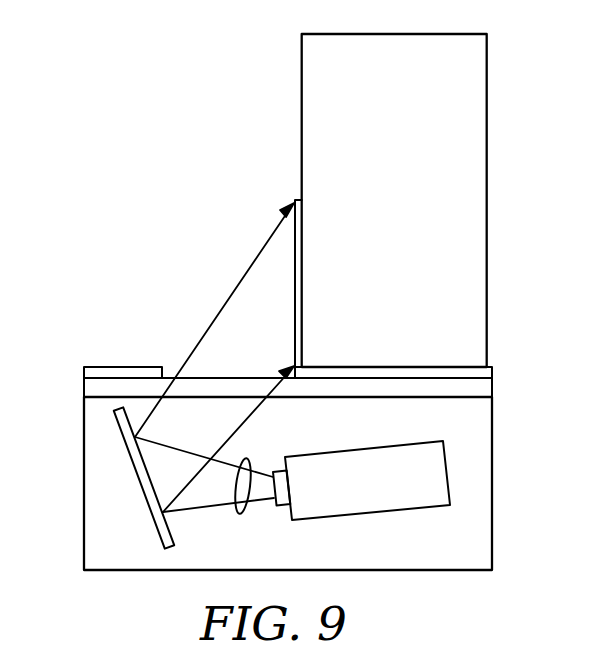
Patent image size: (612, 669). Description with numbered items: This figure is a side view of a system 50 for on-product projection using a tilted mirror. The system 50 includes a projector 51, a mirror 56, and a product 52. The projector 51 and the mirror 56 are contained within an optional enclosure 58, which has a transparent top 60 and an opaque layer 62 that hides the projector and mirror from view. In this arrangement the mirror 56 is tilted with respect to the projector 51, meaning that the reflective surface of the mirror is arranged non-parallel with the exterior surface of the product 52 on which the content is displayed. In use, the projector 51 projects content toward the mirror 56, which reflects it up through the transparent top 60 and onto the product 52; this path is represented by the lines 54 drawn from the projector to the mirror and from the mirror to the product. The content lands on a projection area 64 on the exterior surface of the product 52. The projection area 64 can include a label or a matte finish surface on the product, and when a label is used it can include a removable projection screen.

The system 50 is at (192, 194).
The projector 51 is at (368, 513).
The product 52 is at (487, 234).
The lines 54 is at (243, 512).
The mirror 56 is at (162, 537).
The enclosure 58 is at (84, 472).
The transparent top 60 is at (84, 385).
The opaque layer 62 is at (95, 373).
The projection area 64 is at (295, 331).